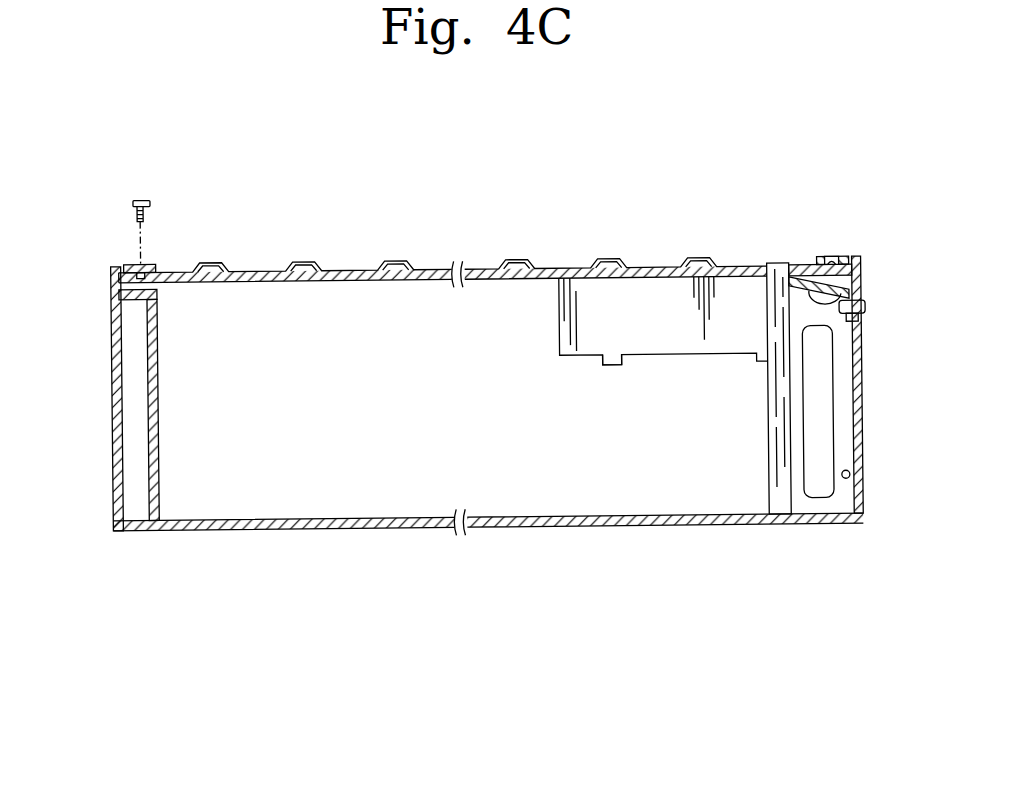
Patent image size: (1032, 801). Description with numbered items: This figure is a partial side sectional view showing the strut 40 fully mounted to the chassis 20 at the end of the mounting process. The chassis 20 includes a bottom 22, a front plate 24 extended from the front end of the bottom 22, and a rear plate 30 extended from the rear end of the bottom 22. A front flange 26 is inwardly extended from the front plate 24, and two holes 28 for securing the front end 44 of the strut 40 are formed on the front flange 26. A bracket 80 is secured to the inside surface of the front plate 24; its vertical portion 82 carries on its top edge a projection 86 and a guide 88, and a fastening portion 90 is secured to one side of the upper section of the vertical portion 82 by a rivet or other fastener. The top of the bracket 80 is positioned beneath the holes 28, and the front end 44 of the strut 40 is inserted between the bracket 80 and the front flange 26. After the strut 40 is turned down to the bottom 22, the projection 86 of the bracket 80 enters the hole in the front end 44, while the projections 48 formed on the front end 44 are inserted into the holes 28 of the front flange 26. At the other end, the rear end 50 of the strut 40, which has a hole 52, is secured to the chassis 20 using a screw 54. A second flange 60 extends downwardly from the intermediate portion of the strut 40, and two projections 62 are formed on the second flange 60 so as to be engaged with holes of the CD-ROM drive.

The chassis 20 is at (488, 443).
The bottom 22 is at (647, 515).
The front plate 24 is at (862, 387).
The front flange 26 is at (847, 262).
The holes 28 is at (837, 263).
The rear plate 30 is at (112, 393).
The strut 40 is at (423, 214).
The front end 44 is at (844, 229).
The projections 48 is at (834, 263).
The rear end 50 is at (167, 267).
The hole 52 is at (139, 264).
The screw 54 is at (142, 193).
The second flange 60 is at (664, 351).
The projections 62 is at (612, 367).
The bracket 80 is at (820, 417).
The vertical portion 82 is at (848, 437).
The projection 86 is at (784, 265).
The guide 88 is at (856, 289).
The fastening portion 90 is at (863, 322).